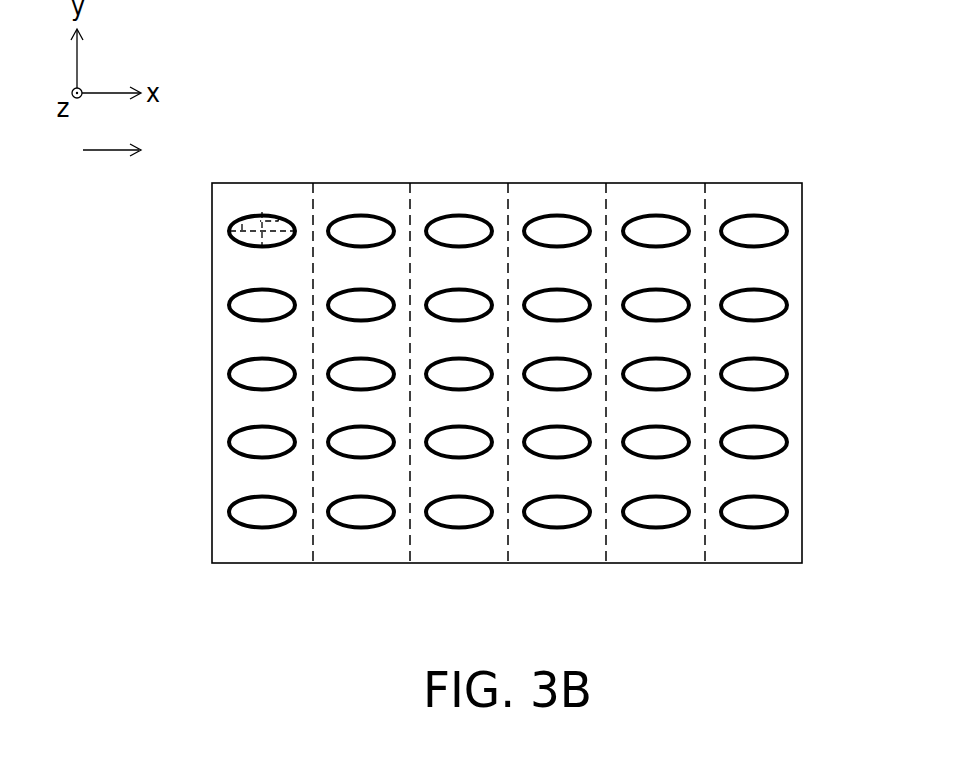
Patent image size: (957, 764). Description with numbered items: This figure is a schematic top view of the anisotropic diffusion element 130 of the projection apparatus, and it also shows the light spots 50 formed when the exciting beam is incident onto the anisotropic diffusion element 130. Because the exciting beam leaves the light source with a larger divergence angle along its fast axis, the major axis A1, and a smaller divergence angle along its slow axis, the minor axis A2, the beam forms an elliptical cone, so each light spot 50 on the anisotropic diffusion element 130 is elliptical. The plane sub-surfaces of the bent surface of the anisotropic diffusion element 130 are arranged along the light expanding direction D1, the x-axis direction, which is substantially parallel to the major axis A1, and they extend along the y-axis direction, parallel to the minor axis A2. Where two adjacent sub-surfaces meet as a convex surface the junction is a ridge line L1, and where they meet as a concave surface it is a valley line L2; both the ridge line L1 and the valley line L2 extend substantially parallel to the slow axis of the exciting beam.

The anisotropic diffusion element 130 is at (798, 132).
The light spots 50 is at (240, 245).
The major axis A1 is at (244, 222).
The minor axis A2 is at (279, 218).
The ridge line L1 is at (407, 537).
The valley line L2 is at (310, 537).
The light expanding direction D1 is at (127, 149).